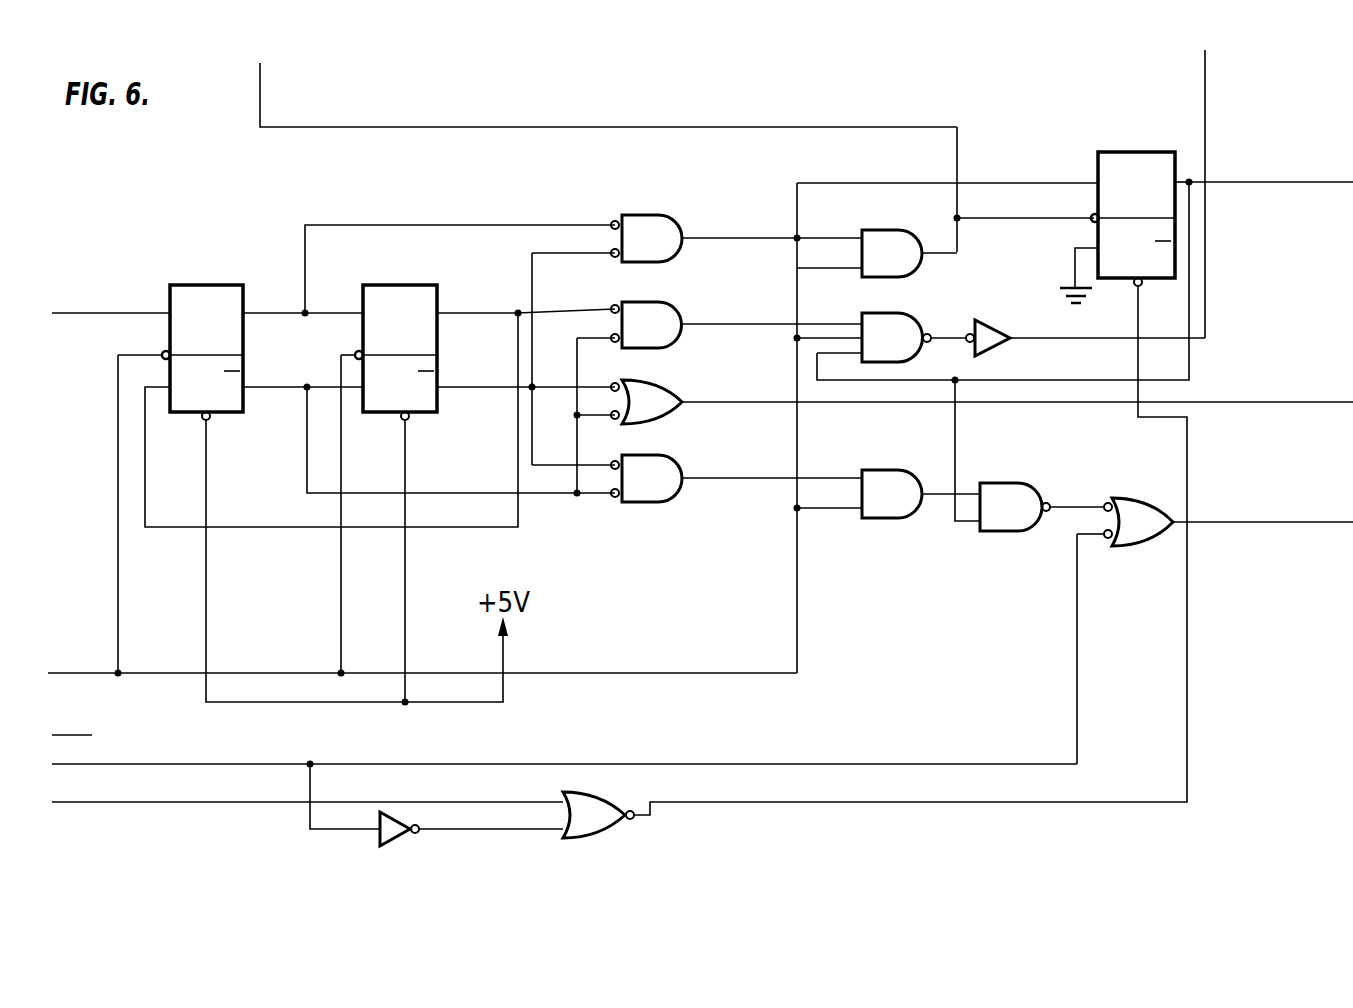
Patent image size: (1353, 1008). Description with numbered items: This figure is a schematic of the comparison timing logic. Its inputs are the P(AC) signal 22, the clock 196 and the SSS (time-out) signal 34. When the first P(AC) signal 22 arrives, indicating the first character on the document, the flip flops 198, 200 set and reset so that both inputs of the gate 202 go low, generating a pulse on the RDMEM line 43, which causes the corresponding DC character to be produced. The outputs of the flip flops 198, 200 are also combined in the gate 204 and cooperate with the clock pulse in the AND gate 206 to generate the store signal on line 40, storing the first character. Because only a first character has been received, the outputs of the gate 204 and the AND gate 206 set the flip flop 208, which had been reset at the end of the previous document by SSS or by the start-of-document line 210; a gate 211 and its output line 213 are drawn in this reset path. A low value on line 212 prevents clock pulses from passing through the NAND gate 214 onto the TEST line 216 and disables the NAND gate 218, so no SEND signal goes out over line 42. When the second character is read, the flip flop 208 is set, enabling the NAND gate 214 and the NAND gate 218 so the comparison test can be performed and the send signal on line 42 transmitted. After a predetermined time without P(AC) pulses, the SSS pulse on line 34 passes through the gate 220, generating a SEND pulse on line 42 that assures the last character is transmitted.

The flip flop 198 is at (222, 285).
The flip flop 200 is at (395, 285).
The flip flop 208 is at (1147, 152).
The gate 204 is at (673, 215).
The gate 202 is at (664, 380).
The AND gate 206 is at (864, 230).
The NAND gate 214 is at (900, 313).
The NAND gate 218 is at (1010, 483).
The gate 220 is at (1128, 498).
The NOR gate 211 is at (604, 836).
The output line of NOR gate 213 is at (700, 802).
The P(AC) signal 22 is at (136, 313).
The store signal line 40 is at (600, 127).
The clock 196 is at (160, 656).
The SSS (time-out) signal 34 is at (122, 745).
The start of document line 210 is at (108, 786).
The TEST line 216 is at (1206, 92).
The line 212 is at (1280, 182).
The RDMEM line 43 is at (1307, 402).
The SEND line 42 is at (1288, 522).